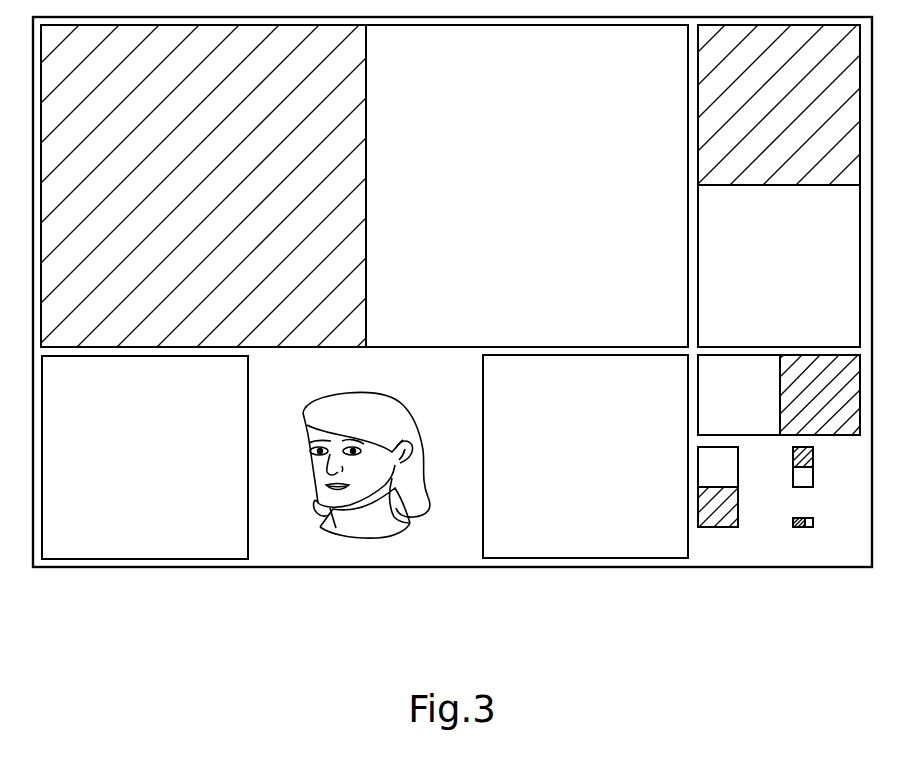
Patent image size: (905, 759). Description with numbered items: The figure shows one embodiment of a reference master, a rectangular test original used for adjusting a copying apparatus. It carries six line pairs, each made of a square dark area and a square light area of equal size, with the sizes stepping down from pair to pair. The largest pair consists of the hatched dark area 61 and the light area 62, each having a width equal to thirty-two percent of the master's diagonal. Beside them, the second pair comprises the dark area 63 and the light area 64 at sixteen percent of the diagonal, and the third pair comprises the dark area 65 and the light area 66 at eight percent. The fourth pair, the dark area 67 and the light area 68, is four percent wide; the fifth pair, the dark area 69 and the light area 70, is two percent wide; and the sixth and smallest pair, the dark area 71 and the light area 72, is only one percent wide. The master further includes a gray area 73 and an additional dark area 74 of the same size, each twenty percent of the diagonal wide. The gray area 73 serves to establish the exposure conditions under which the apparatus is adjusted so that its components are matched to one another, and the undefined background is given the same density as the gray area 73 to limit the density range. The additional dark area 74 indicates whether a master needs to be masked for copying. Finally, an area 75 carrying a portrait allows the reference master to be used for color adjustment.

The dark area 61 is at (191, 204).
The light area 62 is at (515, 204).
The dark area 63 is at (766, 121).
The light area 64 is at (766, 284).
The dark area 65 is at (808, 412).
The light area 66 is at (726, 412).
The dark area 67 is at (737, 503).
The light area 68 is at (736, 455).
The dark area 69 is at (815, 453).
The light area 70 is at (810, 477).
The dark area 71 is at (793, 523).
The light area 72 is at (815, 522).
The gray area 73 is at (133, 474).
The additional dark area 74 is at (573, 474).
The portrait area 75 is at (433, 393).